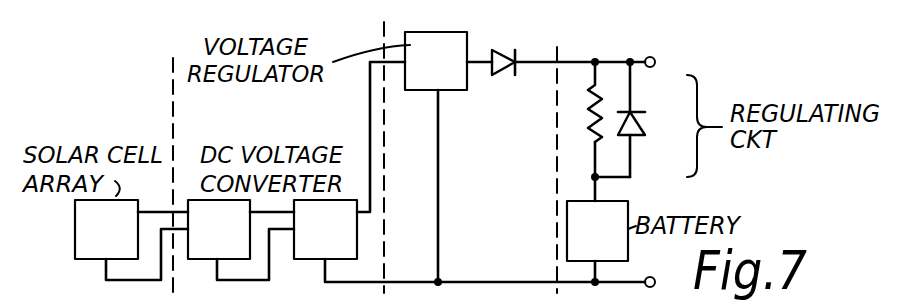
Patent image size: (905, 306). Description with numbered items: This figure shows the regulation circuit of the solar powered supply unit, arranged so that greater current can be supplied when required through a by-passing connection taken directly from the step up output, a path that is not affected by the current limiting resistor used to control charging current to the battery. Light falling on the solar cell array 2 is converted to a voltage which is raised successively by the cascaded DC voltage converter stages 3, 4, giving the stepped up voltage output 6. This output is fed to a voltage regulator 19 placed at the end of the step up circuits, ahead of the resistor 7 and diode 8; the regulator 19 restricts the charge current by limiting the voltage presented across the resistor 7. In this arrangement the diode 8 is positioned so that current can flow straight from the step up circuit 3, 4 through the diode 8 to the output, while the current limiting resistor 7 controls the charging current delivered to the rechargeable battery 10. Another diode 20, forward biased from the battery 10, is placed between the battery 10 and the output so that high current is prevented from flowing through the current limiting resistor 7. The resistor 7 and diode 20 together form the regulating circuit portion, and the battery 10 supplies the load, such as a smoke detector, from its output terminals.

The solar cell array 2 is at (116, 241).
The DC voltage converter 3 is at (229, 241).
The DC voltage converter 4 is at (335, 241).
The voltage output 6 is at (370, 105).
The resistor 7 is at (590, 118).
The diode 8 is at (503, 55).
The rechargeable battery 10 is at (611, 243).
The voltage regulator 19 is at (451, 72).
The diode 20 is at (643, 129).